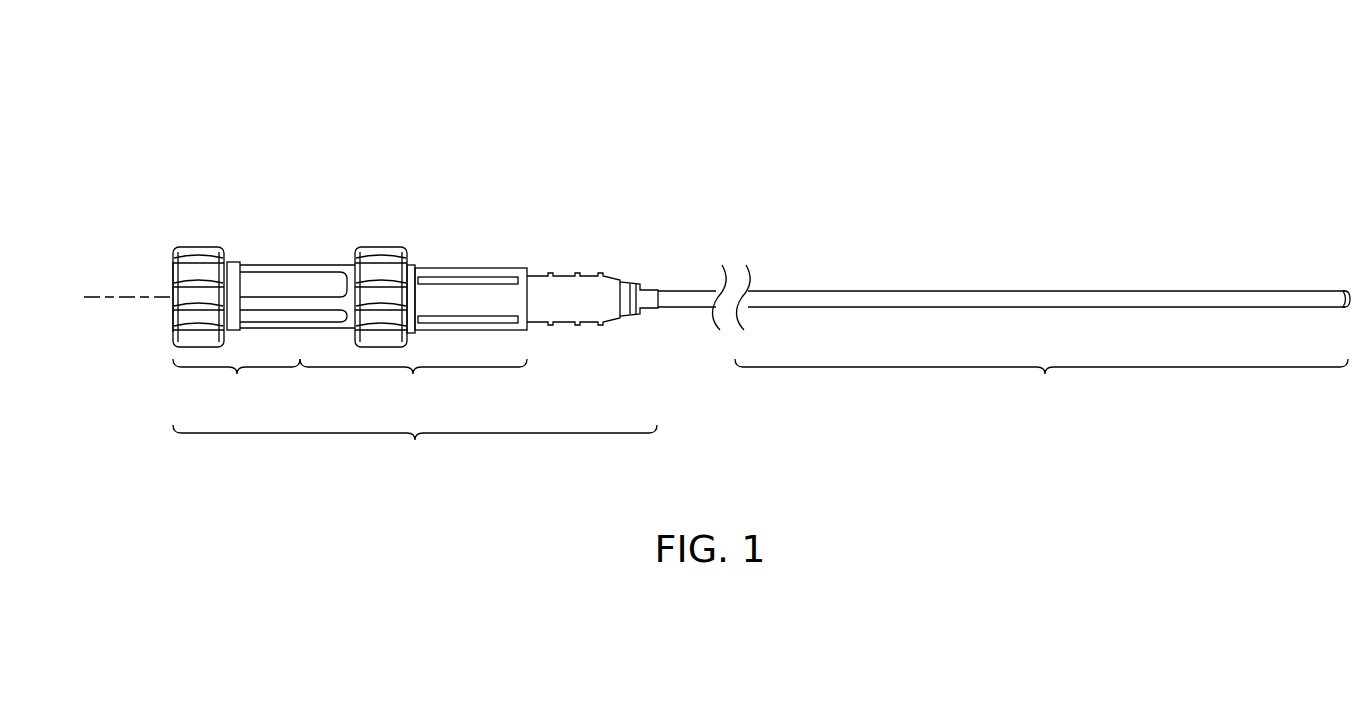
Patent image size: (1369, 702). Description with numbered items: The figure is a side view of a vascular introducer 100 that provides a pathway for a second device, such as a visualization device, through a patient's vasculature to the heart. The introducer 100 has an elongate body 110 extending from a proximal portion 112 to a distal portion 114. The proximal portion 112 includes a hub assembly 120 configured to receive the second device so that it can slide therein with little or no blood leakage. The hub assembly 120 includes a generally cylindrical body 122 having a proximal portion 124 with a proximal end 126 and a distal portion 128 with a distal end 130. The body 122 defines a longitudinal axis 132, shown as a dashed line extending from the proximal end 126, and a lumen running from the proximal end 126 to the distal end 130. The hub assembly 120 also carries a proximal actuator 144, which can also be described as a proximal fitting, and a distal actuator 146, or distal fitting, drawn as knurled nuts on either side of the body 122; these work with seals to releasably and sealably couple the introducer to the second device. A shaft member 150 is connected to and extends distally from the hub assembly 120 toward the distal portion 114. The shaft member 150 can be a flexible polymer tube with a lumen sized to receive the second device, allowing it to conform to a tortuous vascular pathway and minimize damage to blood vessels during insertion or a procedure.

The vascular introducer 100 is at (158, 92).
The elongate body 110 is at (906, 298).
The proximal portion 112 is at (415, 452).
The distal portion 114 is at (1041, 385).
The hub assembly 120 is at (294, 258).
The body 122 is at (470, 268).
The proximal portion 124 is at (236, 385).
The proximal end 126 is at (172, 272).
The distal portion 128 is at (413, 385).
The distal end 130 is at (526, 268).
The longitudinal axis 132 is at (92, 296).
The proximal actuator 144 is at (200, 247).
The distal actuator 146 is at (370, 247).
The shaft member 150 is at (1188, 298).